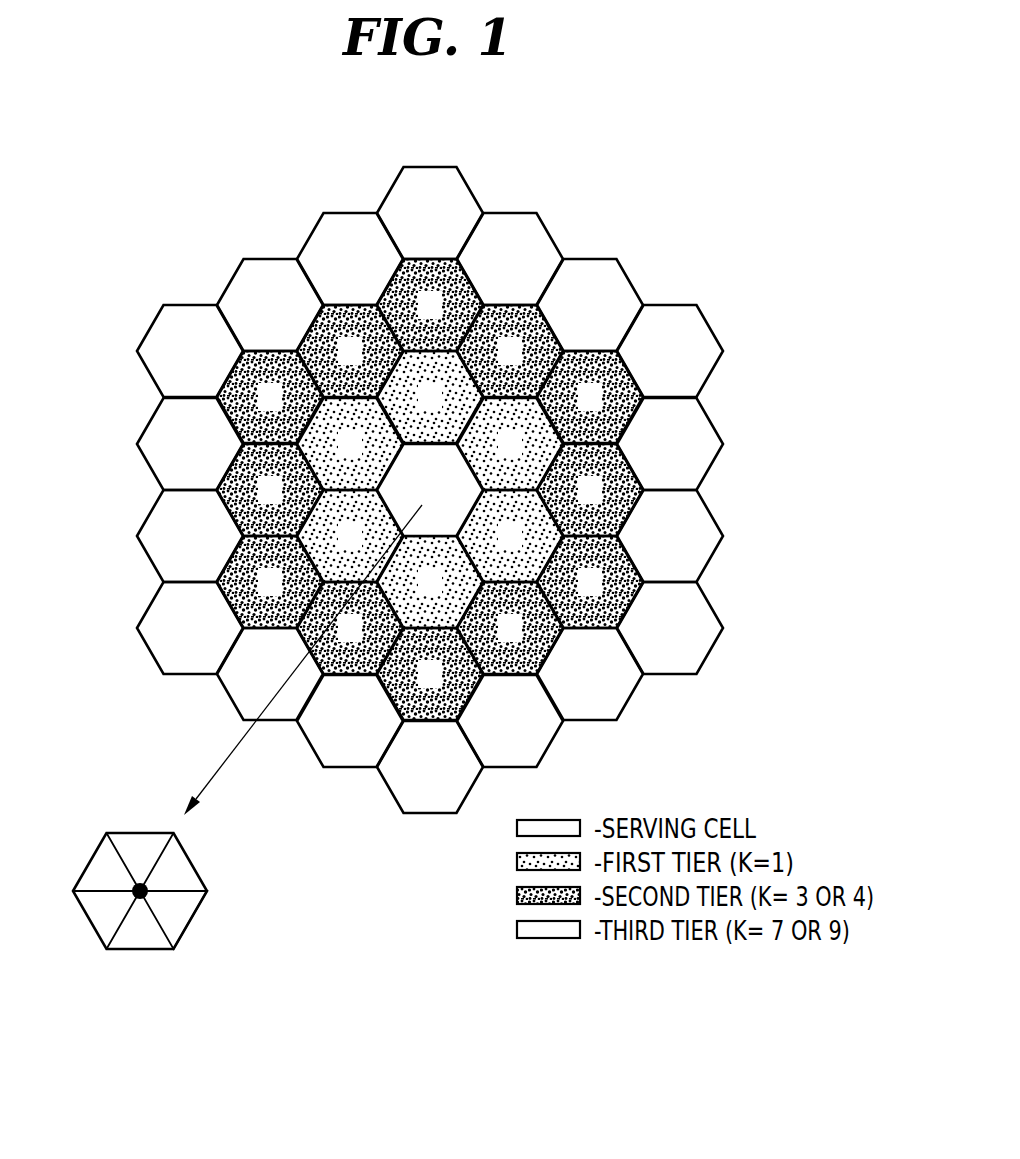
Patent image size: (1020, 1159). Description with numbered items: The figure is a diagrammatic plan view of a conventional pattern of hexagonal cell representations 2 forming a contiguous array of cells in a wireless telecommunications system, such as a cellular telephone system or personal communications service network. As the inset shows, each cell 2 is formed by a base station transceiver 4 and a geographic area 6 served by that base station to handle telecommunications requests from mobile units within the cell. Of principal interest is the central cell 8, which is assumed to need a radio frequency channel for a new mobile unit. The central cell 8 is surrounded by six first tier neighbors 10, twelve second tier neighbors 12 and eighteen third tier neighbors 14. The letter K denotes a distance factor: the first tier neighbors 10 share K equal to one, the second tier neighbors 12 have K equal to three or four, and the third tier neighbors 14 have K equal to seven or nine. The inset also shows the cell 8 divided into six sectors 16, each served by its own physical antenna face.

The hexagonal cell representation 2 is at (189, 234).
The third tier neighbor 14 is at (734, 353).
The second tier neighbor 12 is at (653, 476).
The first tier neighbor 10 is at (502, 432).
The central cell 8 is at (416, 478).
The geographic area 6 is at (70, 826).
The sector 16 is at (183, 912).
The base station transceiver 4 is at (142, 900).